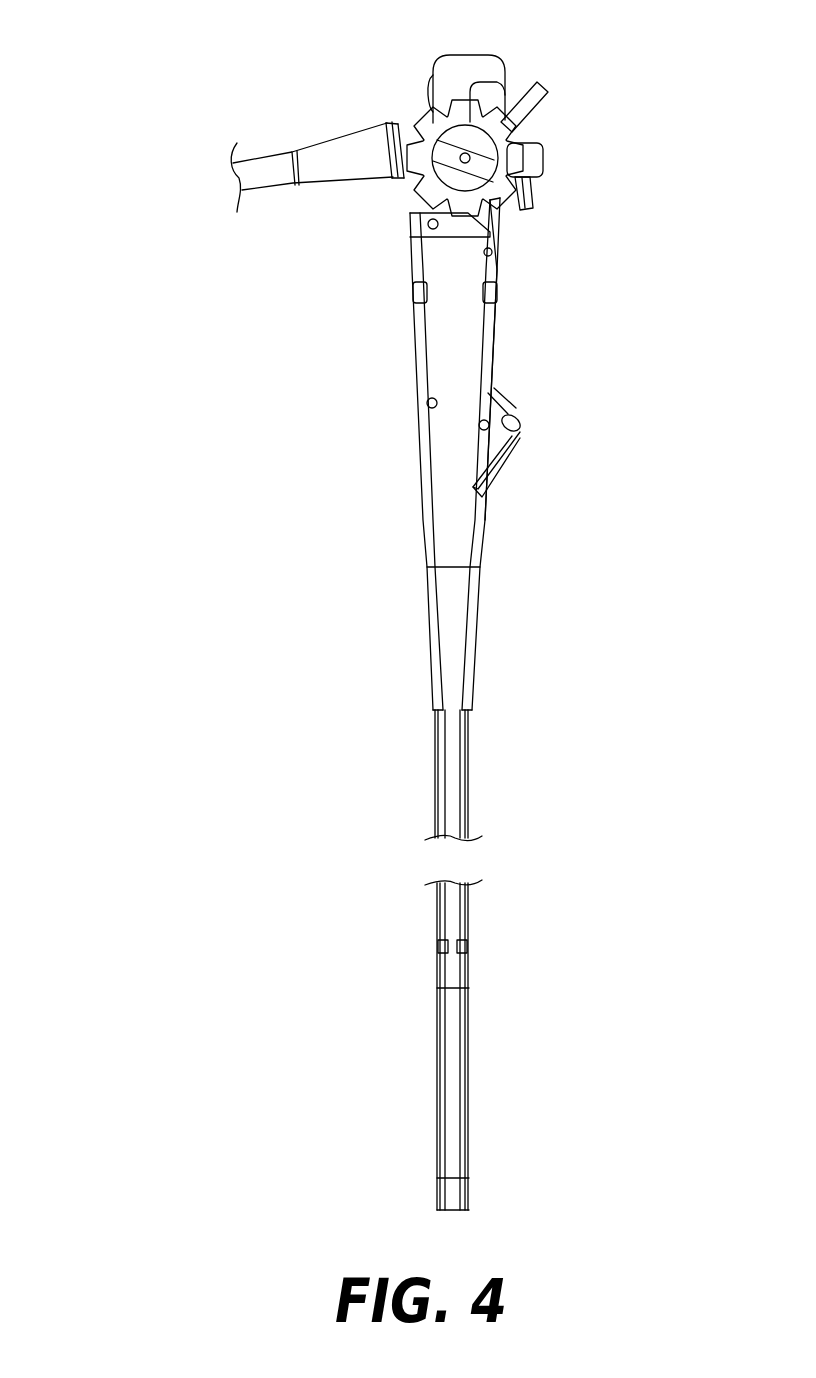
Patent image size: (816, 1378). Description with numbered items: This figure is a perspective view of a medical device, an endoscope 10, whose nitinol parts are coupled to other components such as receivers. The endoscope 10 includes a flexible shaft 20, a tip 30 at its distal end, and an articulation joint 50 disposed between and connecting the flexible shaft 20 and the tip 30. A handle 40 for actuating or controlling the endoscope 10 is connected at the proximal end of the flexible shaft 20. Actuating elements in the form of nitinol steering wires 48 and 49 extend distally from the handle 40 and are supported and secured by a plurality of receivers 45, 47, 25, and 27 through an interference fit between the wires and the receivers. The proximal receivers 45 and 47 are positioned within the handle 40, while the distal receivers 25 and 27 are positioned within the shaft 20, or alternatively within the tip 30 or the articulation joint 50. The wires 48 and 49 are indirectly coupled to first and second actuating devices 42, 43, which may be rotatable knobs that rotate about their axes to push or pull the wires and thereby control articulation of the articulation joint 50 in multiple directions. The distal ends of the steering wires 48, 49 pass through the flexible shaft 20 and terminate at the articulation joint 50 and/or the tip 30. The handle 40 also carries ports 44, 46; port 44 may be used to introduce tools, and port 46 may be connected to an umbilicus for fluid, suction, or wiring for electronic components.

The endoscope 10 is at (153, 108).
The flexible shaft 20 is at (458, 777).
The distal receiver 25 is at (438, 946).
The distal receiver 27 is at (467, 947).
The tip 30 is at (455, 1197).
The handle 40 is at (402, 352).
The first actuating device 42 is at (485, 105).
The second actuating device 43 is at (518, 132).
The port 44 is at (508, 418).
The proximal receiver 45 is at (413, 292).
The port 46 is at (342, 162).
The proximal receiver 47 is at (497, 292).
The nitinol steering wire 48 is at (420, 335).
The nitinol steering wire 49 is at (490, 337).
The articulation joint 50 is at (462, 1047).